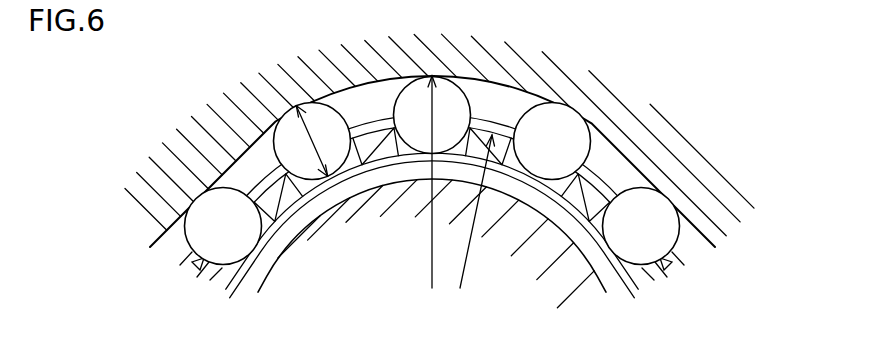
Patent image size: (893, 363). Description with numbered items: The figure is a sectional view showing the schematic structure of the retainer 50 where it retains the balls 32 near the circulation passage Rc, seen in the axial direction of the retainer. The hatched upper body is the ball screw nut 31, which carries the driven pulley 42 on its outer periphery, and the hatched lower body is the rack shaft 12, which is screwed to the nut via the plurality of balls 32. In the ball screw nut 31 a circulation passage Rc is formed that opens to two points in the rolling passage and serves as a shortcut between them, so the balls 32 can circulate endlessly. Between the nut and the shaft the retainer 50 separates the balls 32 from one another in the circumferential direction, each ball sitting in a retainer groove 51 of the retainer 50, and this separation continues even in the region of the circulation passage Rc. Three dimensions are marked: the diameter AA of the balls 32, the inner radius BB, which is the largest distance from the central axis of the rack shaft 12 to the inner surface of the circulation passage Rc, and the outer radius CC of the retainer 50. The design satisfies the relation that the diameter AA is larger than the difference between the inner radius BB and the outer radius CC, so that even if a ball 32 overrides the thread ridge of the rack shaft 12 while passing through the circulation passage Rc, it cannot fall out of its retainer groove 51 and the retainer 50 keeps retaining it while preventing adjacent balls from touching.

The rack shaft 12 is at (618, 287).
The ball screw nut 31 is at (439, 130).
The driven pulley 42 is at (515, 58).
The balls 32 is at (537, 114).
The retainer 50 is at (672, 262).
The retainer groove 51 is at (352, 137).
The circulation passage Rc is at (388, 85).
The diameter AA is at (318, 141).
The inner radius BB is at (417, 182).
The outer radius CC is at (478, 211).